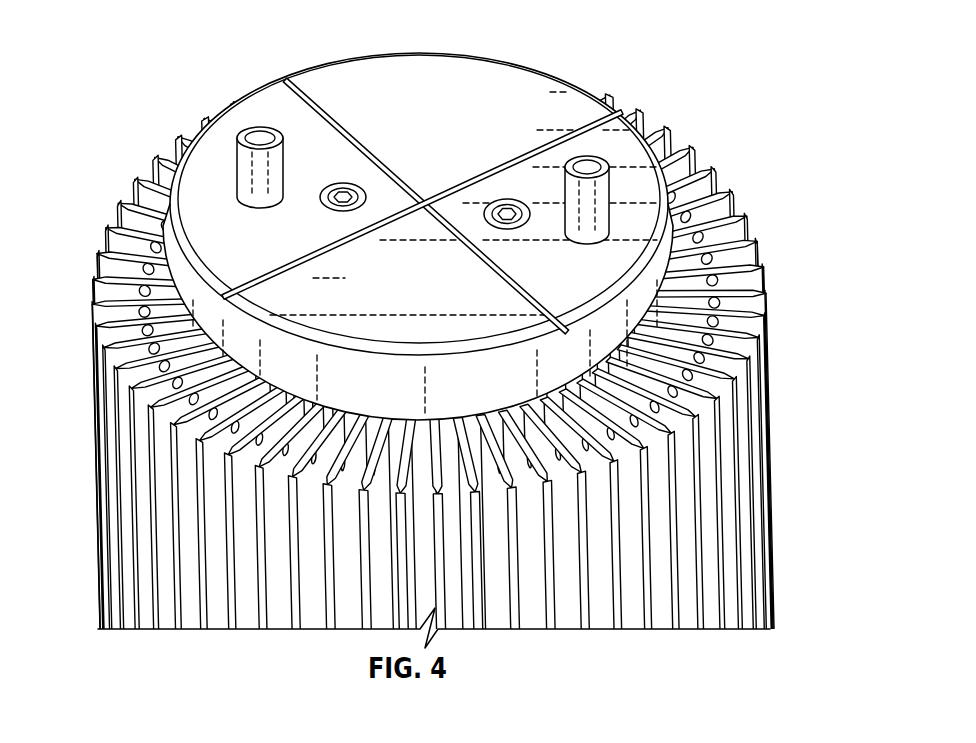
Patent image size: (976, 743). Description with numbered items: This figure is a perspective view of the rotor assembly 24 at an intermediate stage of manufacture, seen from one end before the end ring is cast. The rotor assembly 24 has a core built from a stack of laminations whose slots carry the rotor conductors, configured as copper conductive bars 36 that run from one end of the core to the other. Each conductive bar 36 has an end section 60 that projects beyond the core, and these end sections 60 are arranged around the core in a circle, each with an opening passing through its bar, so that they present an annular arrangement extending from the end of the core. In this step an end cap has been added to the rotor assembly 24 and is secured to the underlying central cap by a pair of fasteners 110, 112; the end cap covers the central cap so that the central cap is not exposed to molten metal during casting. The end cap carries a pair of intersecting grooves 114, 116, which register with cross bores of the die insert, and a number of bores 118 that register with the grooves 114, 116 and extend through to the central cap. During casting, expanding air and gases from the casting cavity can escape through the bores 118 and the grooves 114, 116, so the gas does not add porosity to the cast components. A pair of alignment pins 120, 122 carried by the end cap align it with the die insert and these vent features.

The rotor assembly 24 is at (430, 415).
The conductive bars 36 is at (685, 572).
The end sections 60 is at (710, 158).
The fastener 110 is at (331, 186).
The fastener 112 is at (490, 200).
The groove 114 is at (290, 264).
The groove 116 is at (393, 165).
The bores 118 is at (422, 200).
The alignment pin 120 is at (257, 136).
The alignment pin 122 is at (588, 165).